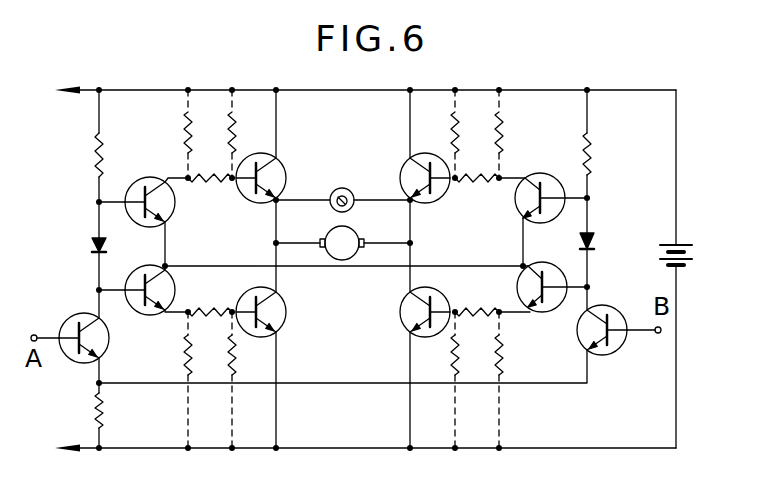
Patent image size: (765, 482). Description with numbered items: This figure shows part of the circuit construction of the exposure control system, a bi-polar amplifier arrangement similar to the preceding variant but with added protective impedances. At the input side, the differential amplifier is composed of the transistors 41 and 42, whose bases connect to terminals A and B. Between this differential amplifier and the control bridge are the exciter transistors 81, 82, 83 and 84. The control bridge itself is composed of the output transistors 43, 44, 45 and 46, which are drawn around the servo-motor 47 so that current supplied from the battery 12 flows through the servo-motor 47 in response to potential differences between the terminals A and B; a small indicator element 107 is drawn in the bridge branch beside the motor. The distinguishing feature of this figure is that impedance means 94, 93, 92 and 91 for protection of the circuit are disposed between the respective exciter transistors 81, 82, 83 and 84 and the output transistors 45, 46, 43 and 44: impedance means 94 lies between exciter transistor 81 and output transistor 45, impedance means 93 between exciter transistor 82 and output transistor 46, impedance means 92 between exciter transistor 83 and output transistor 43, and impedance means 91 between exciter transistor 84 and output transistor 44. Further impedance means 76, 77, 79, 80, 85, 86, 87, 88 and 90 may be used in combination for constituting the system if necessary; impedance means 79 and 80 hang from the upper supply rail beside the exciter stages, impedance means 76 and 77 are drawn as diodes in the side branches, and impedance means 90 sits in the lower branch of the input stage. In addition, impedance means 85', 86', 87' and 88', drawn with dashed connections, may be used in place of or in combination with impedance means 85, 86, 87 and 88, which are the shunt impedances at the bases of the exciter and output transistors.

The battery 12 is at (683, 250).
The differential amplifier transistor 41 is at (72, 362).
The differential amplifier transistor 42 is at (608, 357).
The output transistor 43 is at (278, 160).
The output transistor 44 is at (288, 313).
The output transistor 45 is at (447, 298).
The output transistor 46 is at (428, 153).
The servo-motor 47 is at (342, 260).
The impedance means 76 is at (596, 237).
The impedance means 77 is at (90, 243).
The impedance means 79 is at (102, 150).
The impedance means 80 is at (592, 150).
The exciter transistor 81 is at (557, 264).
The exciter transistor 82 is at (545, 174).
The exciter transistor 83 is at (150, 177).
The exciter transistor 84 is at (142, 275).
The impedance means 85 is at (517, 350).
The impedance means 85' is at (475, 350).
The impedance means 86 is at (516, 131).
The impedance means 86' is at (473, 126).
The impedance means 87 is at (201, 127).
The impedance means 87' is at (250, 127).
The impedance means 88 is at (204, 352).
The impedance means 88' is at (252, 357).
The impedance means 90 is at (104, 410).
The impedance means 91 is at (209, 184).
The impedance means 92 is at (212, 307).
The impedance means 93 is at (472, 183).
The impedance means 94 is at (484, 307).
The indicator lamp 107 is at (341, 188).